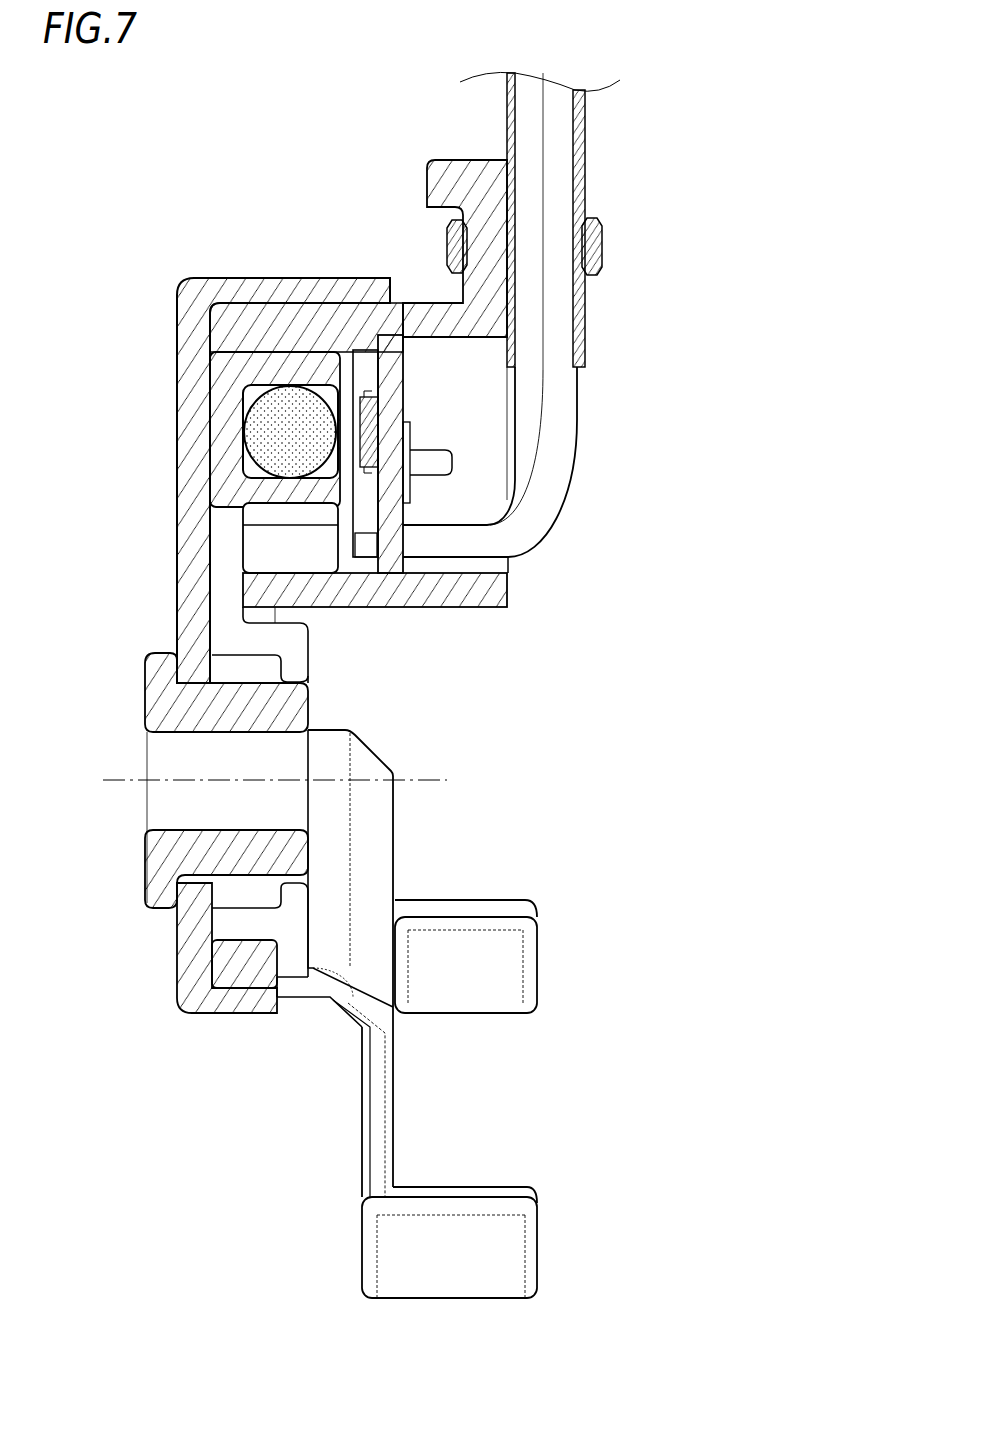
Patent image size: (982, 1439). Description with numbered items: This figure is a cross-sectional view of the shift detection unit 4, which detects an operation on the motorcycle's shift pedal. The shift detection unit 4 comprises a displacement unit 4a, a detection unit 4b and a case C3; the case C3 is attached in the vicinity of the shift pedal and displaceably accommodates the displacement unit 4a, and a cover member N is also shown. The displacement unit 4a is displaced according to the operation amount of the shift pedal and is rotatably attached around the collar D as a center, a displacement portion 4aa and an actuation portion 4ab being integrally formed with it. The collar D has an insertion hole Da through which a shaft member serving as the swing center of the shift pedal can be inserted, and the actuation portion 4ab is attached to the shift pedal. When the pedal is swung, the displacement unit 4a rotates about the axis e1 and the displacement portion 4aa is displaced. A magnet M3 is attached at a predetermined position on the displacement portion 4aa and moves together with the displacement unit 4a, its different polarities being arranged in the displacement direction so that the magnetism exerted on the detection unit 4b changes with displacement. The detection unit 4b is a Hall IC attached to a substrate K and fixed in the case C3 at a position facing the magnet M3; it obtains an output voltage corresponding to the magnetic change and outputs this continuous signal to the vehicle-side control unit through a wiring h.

The shift detection unit 4 is at (105, 264).
The cover member N is at (187, 349).
The magnet M3 is at (243, 436).
The displacement portion 4aa is at (222, 488).
The collar D is at (157, 707).
The axis e1 is at (257, 781).
The insertion hole Da is at (190, 825).
The detection unit 4b is at (385, 415).
The wiring h is at (560, 447).
The substrate K is at (493, 520).
The case C3 is at (453, 597).
The displacement unit 4a is at (394, 838).
The actuation portion 4ab is at (395, 1098).